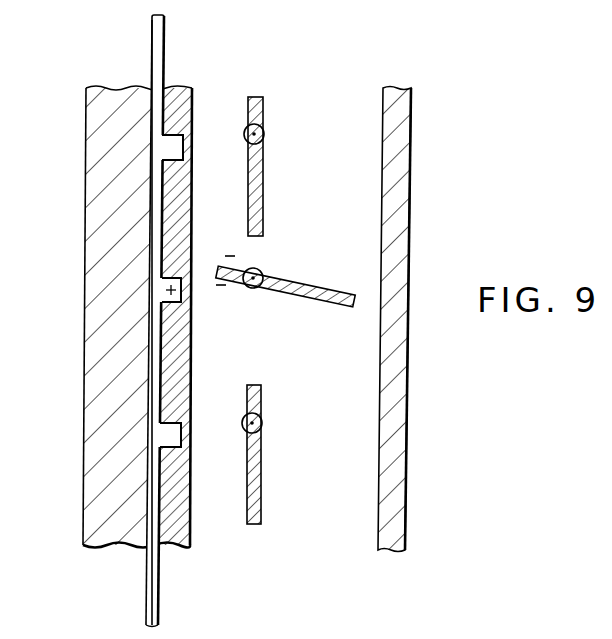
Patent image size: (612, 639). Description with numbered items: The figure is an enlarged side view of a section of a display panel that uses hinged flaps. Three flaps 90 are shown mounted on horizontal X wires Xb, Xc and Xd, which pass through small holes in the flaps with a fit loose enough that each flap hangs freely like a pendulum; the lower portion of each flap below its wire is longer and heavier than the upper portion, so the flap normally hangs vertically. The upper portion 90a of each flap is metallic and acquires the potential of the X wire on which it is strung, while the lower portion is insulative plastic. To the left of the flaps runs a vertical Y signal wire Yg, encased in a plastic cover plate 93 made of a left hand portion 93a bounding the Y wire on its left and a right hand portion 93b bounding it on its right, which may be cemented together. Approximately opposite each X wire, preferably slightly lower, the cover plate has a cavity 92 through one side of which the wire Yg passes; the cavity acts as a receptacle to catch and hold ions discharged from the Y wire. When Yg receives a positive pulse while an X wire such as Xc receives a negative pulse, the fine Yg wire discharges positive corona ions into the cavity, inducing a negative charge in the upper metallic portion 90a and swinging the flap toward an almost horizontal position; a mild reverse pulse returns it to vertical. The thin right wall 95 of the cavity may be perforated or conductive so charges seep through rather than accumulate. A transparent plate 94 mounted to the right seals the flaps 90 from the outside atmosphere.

The flap 90 is at (263, 187).
The upper metallic portion of flap 90a is at (265, 113).
The cavity 92 is at (172, 153).
The plastic cover plate 93 is at (62, 529).
The left hand portion of cover plate 93a is at (118, 550).
The right hand portion of cover plate 93b is at (175, 548).
The plate 94 is at (412, 97).
The thin right wall of cavity 95 is at (185, 150).
The vertical Y signal wire Yg is at (164, 43).
The horizontal X wire Xb is at (262, 132).
The horizontal X wire Xc is at (261, 276).
The horizontal X wire Xd is at (260, 419).